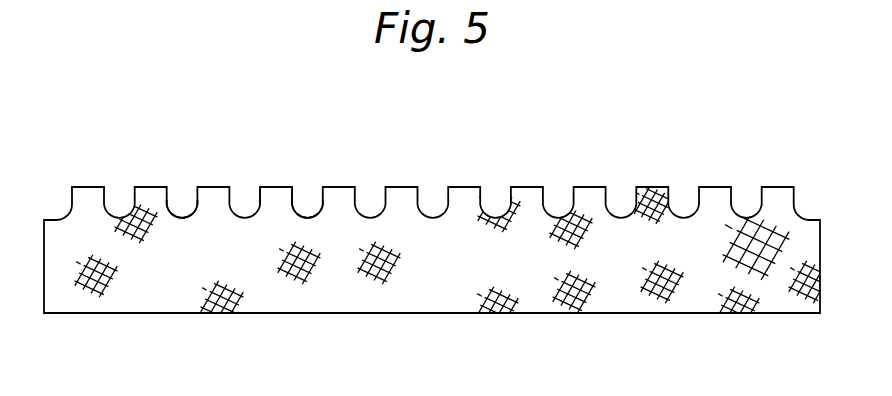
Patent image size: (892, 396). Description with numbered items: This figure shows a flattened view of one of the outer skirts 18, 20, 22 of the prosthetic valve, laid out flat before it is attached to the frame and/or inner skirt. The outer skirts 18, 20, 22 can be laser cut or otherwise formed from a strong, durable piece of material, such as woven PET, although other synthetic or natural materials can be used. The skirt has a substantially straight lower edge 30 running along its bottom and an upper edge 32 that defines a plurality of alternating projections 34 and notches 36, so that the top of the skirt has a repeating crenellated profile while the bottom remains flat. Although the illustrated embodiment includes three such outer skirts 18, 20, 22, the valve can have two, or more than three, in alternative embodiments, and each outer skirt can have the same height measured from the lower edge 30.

The outer skirt 18 is at (453, 199).
The outer skirt 20 is at (453, 199).
The outer skirt 22 is at (571, 140).
The lower edge 30 is at (100, 313).
The upper edge 32 is at (168, 198).
The projection 34 is at (275, 188).
The notch 36 is at (308, 218).